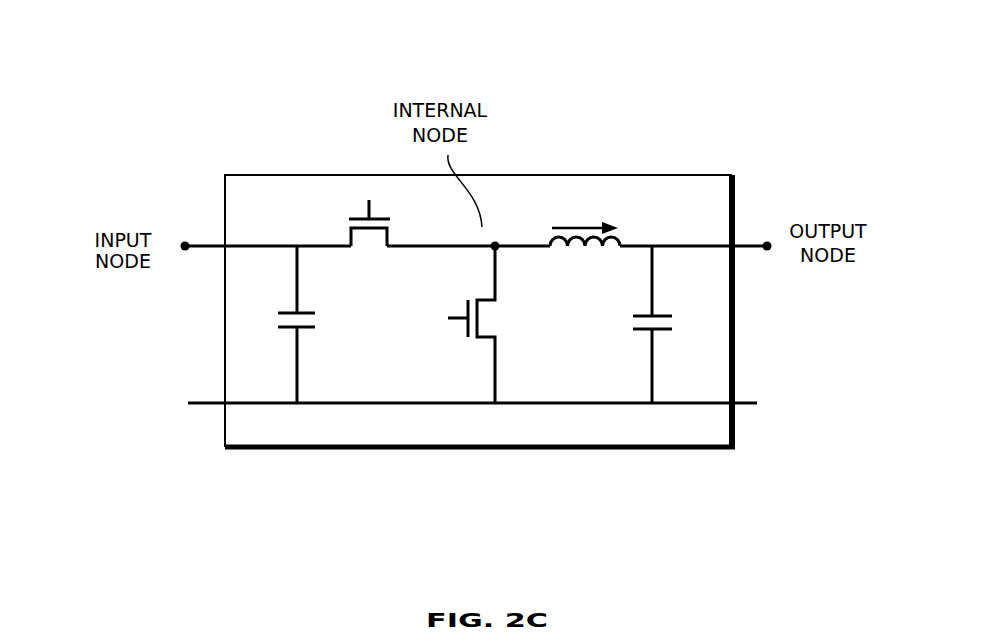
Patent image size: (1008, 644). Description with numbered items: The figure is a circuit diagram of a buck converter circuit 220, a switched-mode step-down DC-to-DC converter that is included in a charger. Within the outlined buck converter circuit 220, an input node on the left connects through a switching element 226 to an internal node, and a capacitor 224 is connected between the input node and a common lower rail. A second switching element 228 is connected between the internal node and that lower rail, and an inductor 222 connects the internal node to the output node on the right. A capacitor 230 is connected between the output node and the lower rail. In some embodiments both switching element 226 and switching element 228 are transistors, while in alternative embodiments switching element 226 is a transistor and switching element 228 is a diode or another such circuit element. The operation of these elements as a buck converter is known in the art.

The buck converter circuit 220 is at (730, 162).
The inductor 222 is at (580, 207).
The capacitor 224 is at (258, 320).
The switching element 226 is at (360, 192).
The switching element 228 is at (463, 363).
The capacitor 230 is at (690, 315).